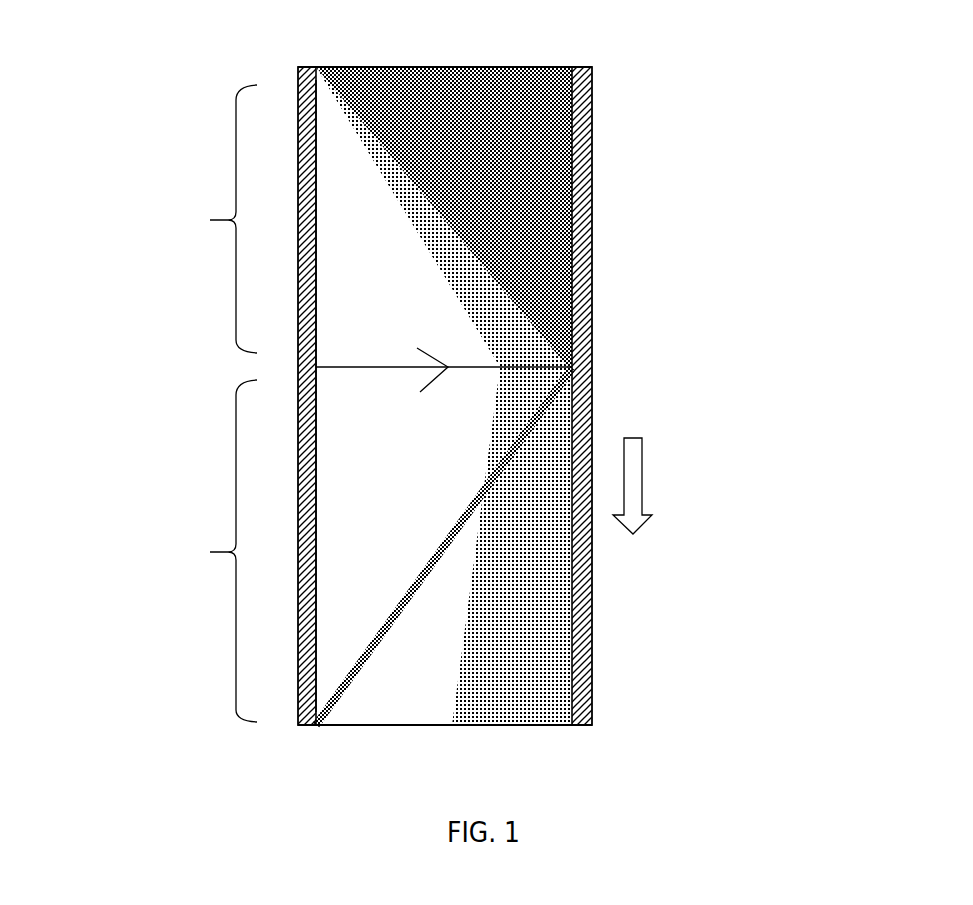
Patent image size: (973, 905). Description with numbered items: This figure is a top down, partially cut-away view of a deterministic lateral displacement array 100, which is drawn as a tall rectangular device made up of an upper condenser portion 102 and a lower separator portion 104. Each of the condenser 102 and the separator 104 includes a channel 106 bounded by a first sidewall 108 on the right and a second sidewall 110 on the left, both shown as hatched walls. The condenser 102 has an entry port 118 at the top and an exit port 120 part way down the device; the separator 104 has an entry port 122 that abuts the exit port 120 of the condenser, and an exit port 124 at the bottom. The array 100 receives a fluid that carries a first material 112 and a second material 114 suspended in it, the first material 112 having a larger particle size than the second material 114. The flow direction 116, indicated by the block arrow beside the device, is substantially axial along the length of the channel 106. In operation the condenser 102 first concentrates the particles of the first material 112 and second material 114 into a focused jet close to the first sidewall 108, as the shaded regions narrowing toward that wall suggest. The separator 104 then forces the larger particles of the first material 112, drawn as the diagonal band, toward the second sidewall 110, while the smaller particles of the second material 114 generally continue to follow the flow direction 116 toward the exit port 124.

The deterministic lateral displacement array 100 is at (834, 216).
The condenser portion 102 is at (204, 219).
The separator portion 104 is at (204, 551).
The channel 106 is at (345, 438).
The first sidewall 108 is at (582, 82).
The second sidewall 110 is at (303, 105).
The first material 112 is at (548, 237).
The second material 114 is at (535, 490).
The flow direction 116 is at (648, 517).
The entry port 118 is at (442, 67).
The exit port 120 is at (444, 342).
The entry port 122 is at (420, 388).
The exit port 124 is at (443, 725).